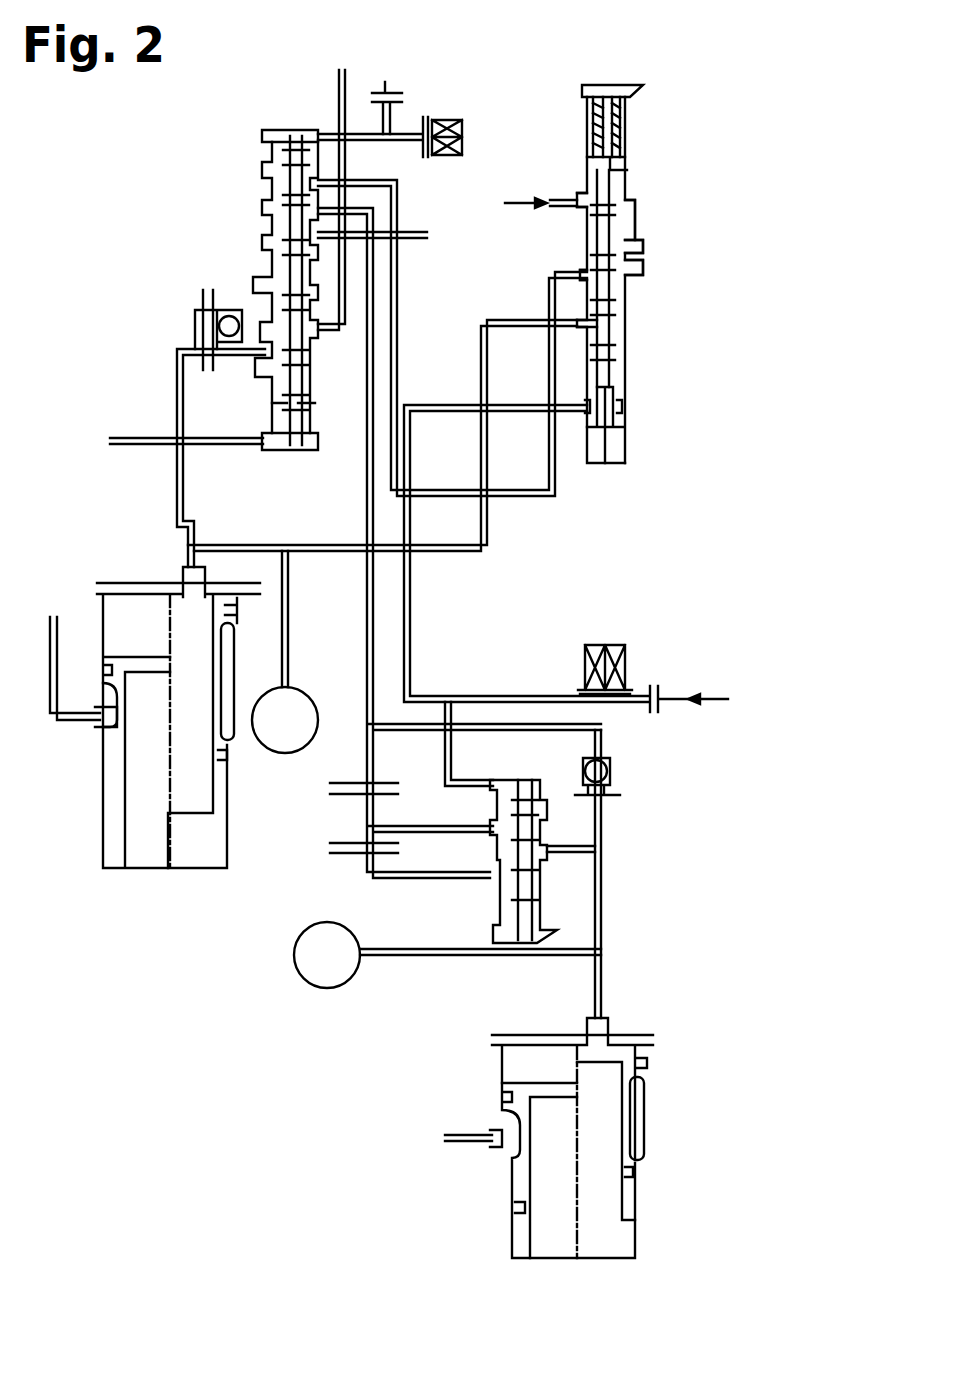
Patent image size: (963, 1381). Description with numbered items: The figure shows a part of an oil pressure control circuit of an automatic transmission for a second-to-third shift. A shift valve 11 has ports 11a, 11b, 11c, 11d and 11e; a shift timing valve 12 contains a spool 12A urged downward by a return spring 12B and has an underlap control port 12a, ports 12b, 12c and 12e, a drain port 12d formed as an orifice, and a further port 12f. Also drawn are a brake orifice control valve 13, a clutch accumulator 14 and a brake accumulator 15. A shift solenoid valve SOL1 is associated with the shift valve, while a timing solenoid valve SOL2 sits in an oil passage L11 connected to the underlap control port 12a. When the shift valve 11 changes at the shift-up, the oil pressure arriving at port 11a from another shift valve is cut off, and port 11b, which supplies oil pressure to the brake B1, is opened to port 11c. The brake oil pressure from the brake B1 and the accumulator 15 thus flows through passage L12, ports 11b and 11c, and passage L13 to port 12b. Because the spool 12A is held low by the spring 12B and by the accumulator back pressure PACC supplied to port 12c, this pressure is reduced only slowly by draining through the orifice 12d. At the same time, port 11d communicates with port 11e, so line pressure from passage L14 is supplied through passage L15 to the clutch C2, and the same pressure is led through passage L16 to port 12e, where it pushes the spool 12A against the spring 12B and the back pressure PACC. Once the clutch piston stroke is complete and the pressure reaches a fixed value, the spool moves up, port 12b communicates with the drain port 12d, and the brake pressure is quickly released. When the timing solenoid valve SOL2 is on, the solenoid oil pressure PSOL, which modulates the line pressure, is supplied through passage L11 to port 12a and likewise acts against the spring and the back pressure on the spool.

The 2→3 shift valve 11 is at (272, 128).
The port 11a is at (317, 237).
The port 11b is at (288, 217).
The port 11c is at (283, 160).
The port 11d is at (317, 333).
The port 11e is at (267, 357).
The 2→3 shift timing valve 12 is at (600, 88).
The spool 12A is at (625, 223).
The return spring 12B is at (627, 127).
The underlap control port 12a is at (590, 425).
The port 12b is at (580, 270).
The port 12c is at (583, 193).
The drain port (orifice) 12d is at (643, 273).
The port 12e is at (577, 323).
The port of valve 12 12f is at (643, 253).
The B1 brake orifice control valve 13 is at (523, 777).
The C2 clutch accumulator 14 is at (160, 873).
The B1 brake accumulator 15 is at (567, 1262).
The oil passage L11 is at (523, 693).
The passage L12 is at (360, 478).
The passage L13 is at (393, 332).
The passage L14 is at (336, 95).
The passage L15 is at (173, 492).
The passage L16 is at (487, 537).
The 2→3 shift solenoid valve SOL1 is at (463, 123).
The timing solenoid valve SOL2 is at (606, 643).
The accumulator back pressure PACC is at (508, 207).
The solenoid oil pressure PSOL is at (744, 704).
The clutch C2 is at (285, 652).
The brake B1 is at (447, 955).